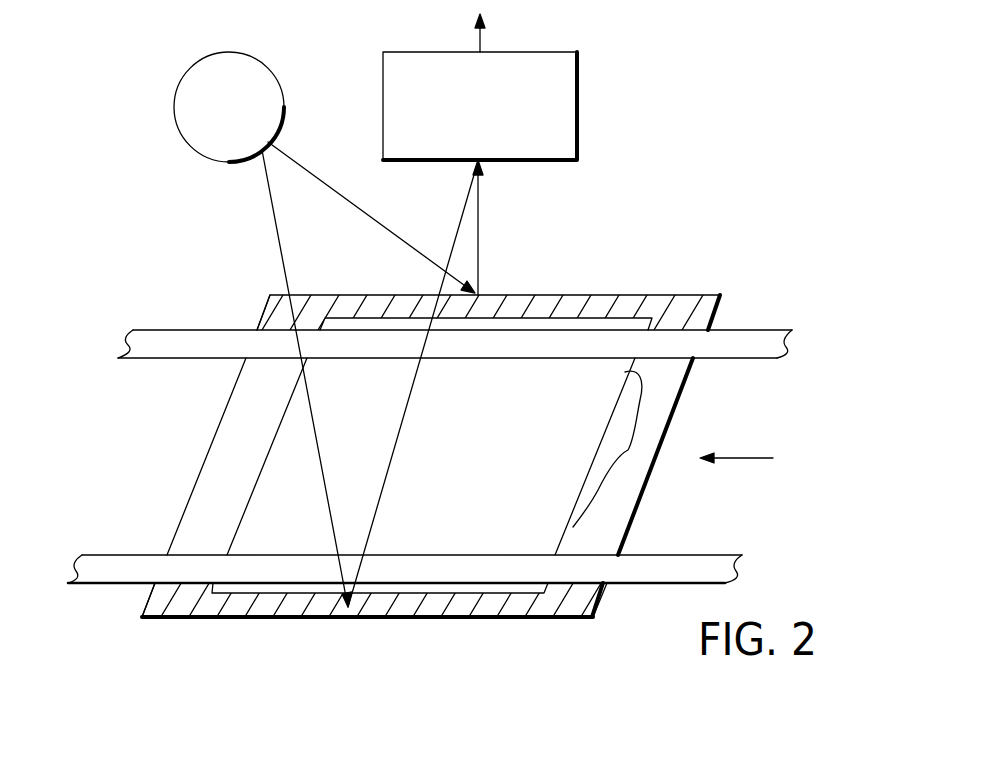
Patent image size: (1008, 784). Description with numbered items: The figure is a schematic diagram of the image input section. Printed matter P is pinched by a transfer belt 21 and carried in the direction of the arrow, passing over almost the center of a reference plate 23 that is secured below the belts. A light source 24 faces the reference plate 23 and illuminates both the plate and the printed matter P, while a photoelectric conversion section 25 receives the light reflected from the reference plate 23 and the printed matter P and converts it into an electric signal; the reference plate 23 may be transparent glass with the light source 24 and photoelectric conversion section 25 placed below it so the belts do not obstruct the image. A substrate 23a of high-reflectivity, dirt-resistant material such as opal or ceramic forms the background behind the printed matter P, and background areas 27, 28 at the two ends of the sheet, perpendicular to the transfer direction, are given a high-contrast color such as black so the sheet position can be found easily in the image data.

The transfer belt 21 is at (170, 330).
The reference plate 23 is at (222, 413).
The substrate 23a is at (628, 450).
The light source 24 is at (284, 103).
The photoelectric conversion section 25 is at (577, 107).
The background area 27 is at (580, 295).
The background area 28 is at (472, 603).
The printed matter P is at (262, 501).